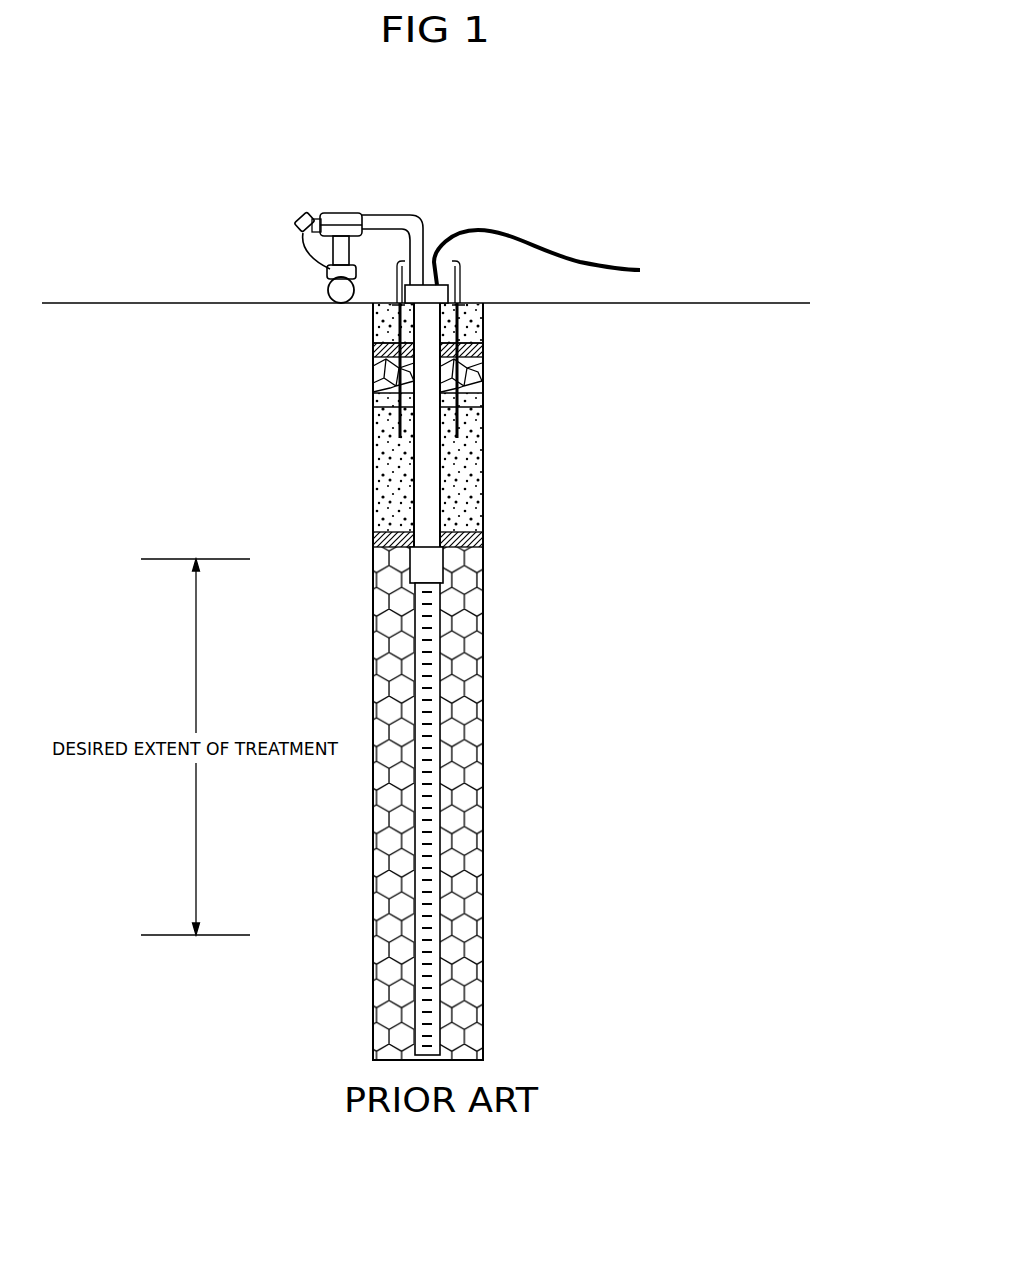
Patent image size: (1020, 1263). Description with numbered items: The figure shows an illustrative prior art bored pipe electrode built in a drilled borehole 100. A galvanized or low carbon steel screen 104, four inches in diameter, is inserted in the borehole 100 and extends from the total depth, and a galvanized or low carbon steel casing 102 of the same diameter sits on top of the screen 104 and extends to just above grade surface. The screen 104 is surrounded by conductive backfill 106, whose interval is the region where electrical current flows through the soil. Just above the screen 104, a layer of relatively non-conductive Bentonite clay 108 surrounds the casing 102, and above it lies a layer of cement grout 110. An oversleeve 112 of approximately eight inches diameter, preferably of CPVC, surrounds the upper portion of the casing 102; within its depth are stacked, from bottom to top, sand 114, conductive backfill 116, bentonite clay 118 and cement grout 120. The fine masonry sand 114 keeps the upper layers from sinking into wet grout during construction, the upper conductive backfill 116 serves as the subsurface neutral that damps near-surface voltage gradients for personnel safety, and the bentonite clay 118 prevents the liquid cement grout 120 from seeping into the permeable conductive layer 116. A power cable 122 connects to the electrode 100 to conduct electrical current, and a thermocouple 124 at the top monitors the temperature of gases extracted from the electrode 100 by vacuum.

The borehole 100 is at (372, 467).
The casing 102 is at (440, 452).
The screen 104 is at (440, 812).
The conductive backfill 106 is at (483, 930).
The Bentonite clay 108 is at (483, 540).
The cement grout 110 is at (483, 487).
The oversleeve 112 is at (460, 297).
The sand 114 is at (483, 401).
The conductive backfill 116 is at (483, 379).
The bentonite clay 118 is at (483, 348).
The cement grout 120 is at (483, 328).
The power cable 122 is at (640, 270).
The thermocouple 124 is at (298, 215).